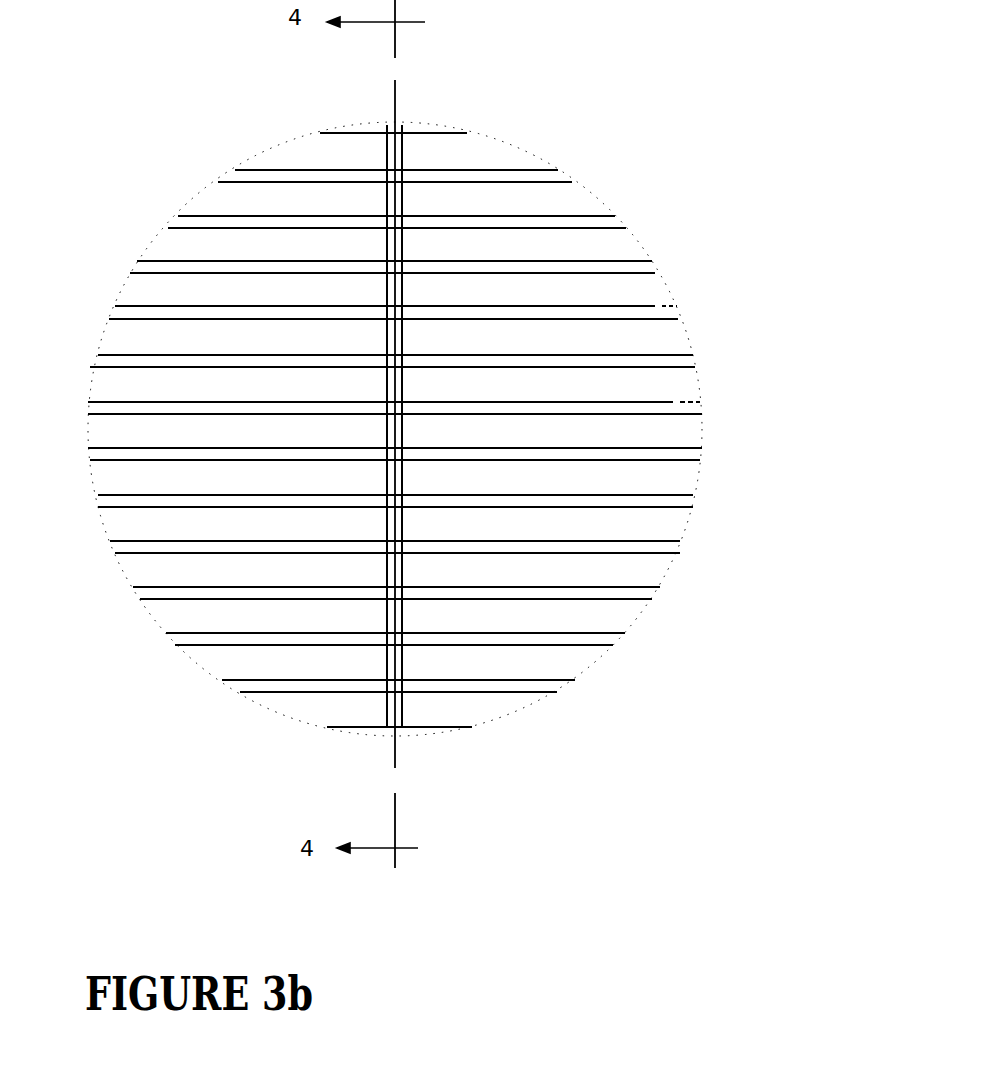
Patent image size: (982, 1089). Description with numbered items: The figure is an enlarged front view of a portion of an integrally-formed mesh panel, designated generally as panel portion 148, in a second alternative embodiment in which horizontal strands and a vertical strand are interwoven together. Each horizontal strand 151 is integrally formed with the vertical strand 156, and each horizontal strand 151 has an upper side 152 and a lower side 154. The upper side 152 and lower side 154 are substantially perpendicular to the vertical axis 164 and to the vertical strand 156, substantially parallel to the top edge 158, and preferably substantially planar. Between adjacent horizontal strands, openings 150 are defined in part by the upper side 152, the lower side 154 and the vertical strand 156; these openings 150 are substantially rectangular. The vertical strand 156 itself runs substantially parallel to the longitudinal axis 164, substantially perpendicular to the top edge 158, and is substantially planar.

The mesh panel portion 148 is at (195, 163).
The openings 150 is at (611, 248).
The horizontal strand 151 is at (662, 318).
The upper side 152 is at (668, 402).
The lower side 154 is at (657, 415).
The vertical strand 156 is at (387, 704).
The top edge 158 is at (432, 130).
The vertical axis 164 is at (397, 106).